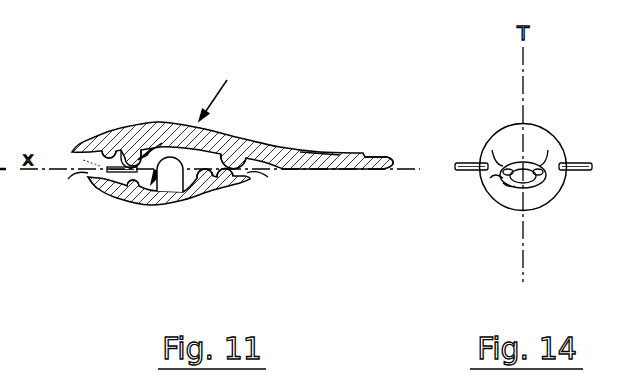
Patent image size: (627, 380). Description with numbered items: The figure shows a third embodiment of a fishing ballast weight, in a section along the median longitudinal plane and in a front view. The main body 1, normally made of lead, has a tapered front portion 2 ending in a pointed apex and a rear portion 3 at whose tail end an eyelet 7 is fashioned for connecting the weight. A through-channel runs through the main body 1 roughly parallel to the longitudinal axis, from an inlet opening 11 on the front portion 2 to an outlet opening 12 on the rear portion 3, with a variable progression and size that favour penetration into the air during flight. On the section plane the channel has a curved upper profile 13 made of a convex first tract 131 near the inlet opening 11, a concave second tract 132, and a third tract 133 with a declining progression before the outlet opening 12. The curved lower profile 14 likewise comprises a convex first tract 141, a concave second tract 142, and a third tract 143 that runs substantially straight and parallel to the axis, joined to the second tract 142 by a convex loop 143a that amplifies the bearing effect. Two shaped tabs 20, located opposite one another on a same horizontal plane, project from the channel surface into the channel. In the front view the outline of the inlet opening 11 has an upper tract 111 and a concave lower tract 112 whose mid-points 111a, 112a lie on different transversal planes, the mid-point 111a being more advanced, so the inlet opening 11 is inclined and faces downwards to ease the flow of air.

In FIG. 11, the main body 1 is at (217, 89).
In FIG. 11, the front portion 2 is at (80, 138).
In FIG. 11, the rear portion 3 is at (310, 146).
In FIG. 11, the eyelet 7 is at (382, 160).
In FIG. 11, the inlet opening 11 is at (85, 174).
In FIG. 14, the inlet opening 11 is at (540, 185).
In FIG. 11, the outlet opening 12 is at (263, 176).
In FIG. 11, the upper profile 13 is at (121, 150).
In FIG. 11, the lower profile 14 is at (181, 170).
In FIG. 11, the shaped tabs 20 is at (116, 175).
In FIG. 14, the shaped tabs 20 is at (500, 170).
In FIG. 11, the first tract 131 is at (70, 160).
In FIG. 11, the second tract 132 is at (100, 150).
In FIG. 11, the third tract 133 is at (247, 153).
In FIG. 11, the first tract 141 is at (90, 180).
In FIG. 11, the second tract 142 is at (130, 188).
In FIG. 11, the third tract 143 is at (233, 178).
In FIG. 11, the convex loop 143a is at (200, 183).
In FIG. 14, the upper tract 111 is at (492, 150).
In FIG. 14, the mid-point 111a is at (548, 150).
In FIG. 14, the lower tract 112 is at (490, 178).
In FIG. 14, the mid-point 112a is at (505, 185).